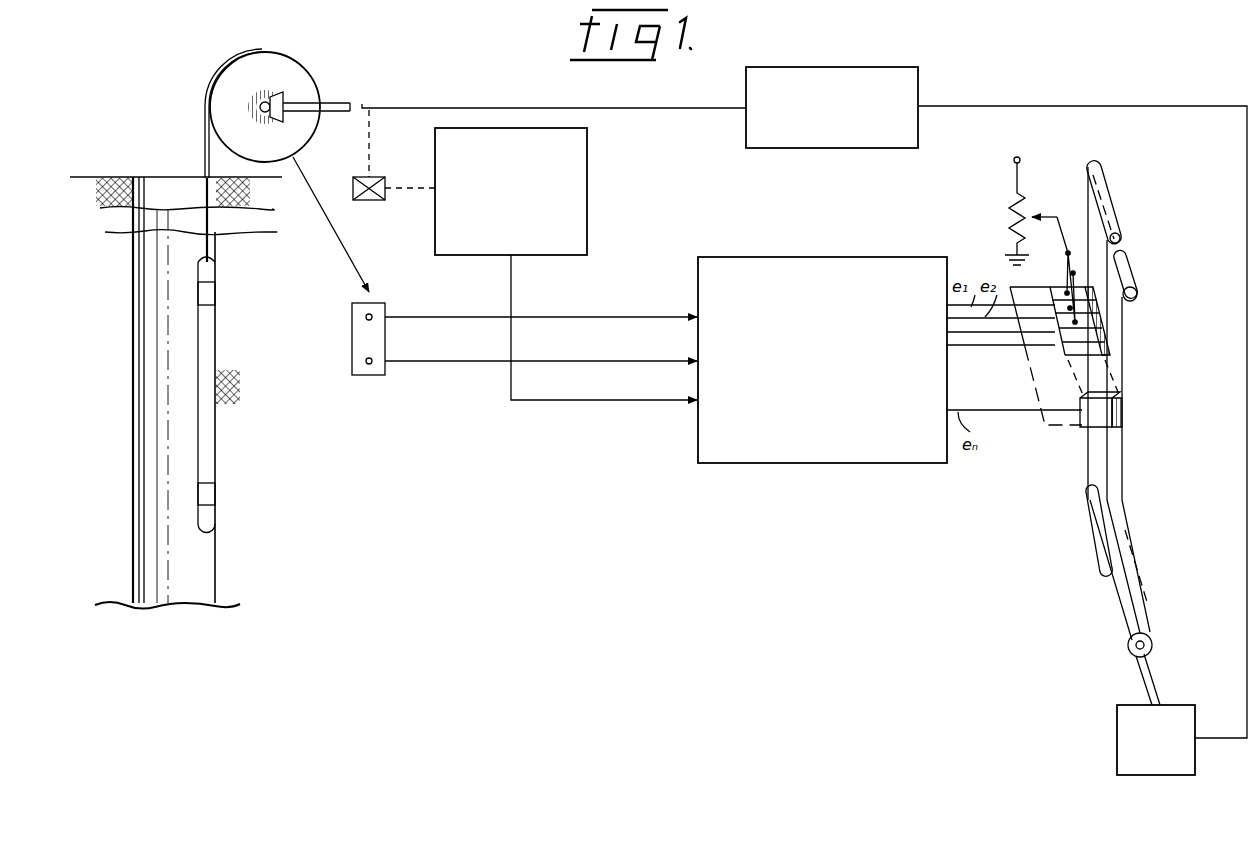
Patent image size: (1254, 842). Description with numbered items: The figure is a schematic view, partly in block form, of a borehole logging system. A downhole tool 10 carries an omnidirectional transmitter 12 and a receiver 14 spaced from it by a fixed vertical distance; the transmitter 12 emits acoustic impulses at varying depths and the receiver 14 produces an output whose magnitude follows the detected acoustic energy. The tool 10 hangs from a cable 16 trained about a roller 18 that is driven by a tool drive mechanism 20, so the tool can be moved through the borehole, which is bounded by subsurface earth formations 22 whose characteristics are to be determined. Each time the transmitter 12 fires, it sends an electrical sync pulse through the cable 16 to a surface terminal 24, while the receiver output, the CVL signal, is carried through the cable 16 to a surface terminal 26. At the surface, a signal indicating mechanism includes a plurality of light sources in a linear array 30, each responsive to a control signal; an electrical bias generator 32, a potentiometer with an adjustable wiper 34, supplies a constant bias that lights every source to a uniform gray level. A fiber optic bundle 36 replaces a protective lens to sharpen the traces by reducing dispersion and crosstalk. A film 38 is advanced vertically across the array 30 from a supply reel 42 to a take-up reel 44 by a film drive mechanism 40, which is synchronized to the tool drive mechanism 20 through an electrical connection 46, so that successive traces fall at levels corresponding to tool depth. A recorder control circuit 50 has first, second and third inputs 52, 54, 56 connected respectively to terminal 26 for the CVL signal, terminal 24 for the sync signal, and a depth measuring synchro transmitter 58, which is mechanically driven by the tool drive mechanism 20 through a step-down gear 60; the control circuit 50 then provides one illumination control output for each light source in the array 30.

The downhole tool 10 is at (197, 350).
The omnidirectional transmitter 12 is at (216, 294).
The receiver 14 is at (216, 498).
The cable 16 is at (205, 134).
The roller 18 is at (312, 77).
The tool drive mechanism 20 is at (832, 67).
The subsurface earth formations 22 is at (235, 400).
The surface terminal 24 is at (368, 366).
The surface terminal 26 is at (352, 318).
The linear light source array 30 is at (1056, 437).
The electrical bias generator 32 is at (1010, 193).
The adjustable wiper 34 is at (1072, 189).
The fiber optic bundle 36 is at (1093, 303).
The film 38 is at (1124, 488).
The film drive mechanism 40 is at (1117, 739).
The supply reel 42 is at (1152, 642).
The take-up reel 44 is at (1136, 300).
The electrical connection 46 is at (1245, 556).
The recorder control circuit 50 is at (806, 257).
The first input 52 is at (695, 308).
The second input 54 is at (700, 358).
The third input 56 is at (695, 403).
The depth measuring synchro transmitter 58 is at (589, 198).
The step-down gear 60 is at (375, 176).